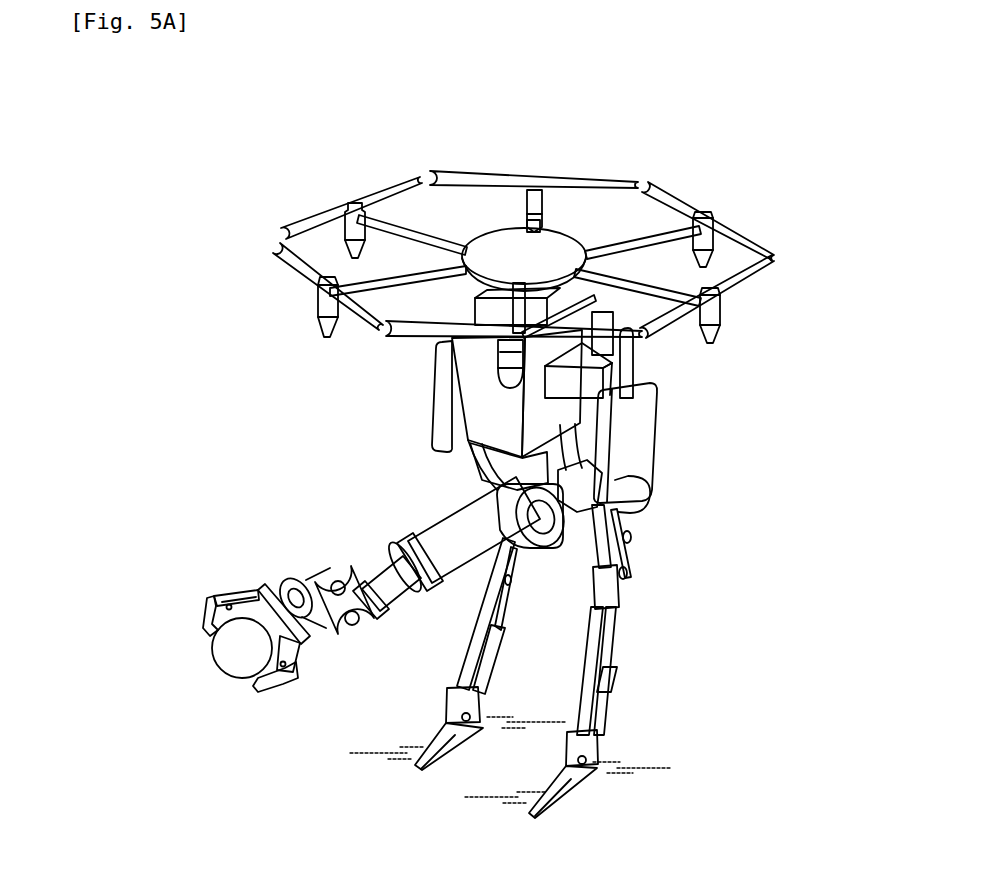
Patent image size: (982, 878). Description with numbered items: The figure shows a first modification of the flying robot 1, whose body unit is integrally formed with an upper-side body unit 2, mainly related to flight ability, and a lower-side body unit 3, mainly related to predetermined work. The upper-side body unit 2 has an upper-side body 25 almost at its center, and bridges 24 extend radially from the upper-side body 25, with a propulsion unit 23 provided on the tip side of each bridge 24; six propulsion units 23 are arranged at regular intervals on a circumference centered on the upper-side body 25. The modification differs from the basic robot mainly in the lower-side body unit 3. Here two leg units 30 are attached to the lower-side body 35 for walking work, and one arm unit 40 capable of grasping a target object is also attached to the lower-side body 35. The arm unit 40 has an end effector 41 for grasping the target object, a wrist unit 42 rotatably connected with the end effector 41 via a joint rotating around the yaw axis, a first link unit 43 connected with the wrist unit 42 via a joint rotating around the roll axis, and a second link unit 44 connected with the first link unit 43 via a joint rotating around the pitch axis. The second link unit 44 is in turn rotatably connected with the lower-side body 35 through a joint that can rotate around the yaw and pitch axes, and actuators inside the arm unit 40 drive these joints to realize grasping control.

The flying robot 1 is at (140, 184).
The upper-side body unit 2 is at (806, 181).
The lower-side body unit 3 is at (726, 615).
The propulsion unit 23 is at (338, 222).
The bridge 24 is at (410, 228).
The upper-side body 25 is at (503, 240).
The leg unit 30 is at (458, 668).
The lower-side body 35 is at (477, 360).
The arm unit 40 is at (417, 477).
The end effector 41 is at (253, 591).
The wrist unit 42 is at (333, 560).
The first link unit 43 is at (457, 538).
The second link unit 44 is at (512, 486).